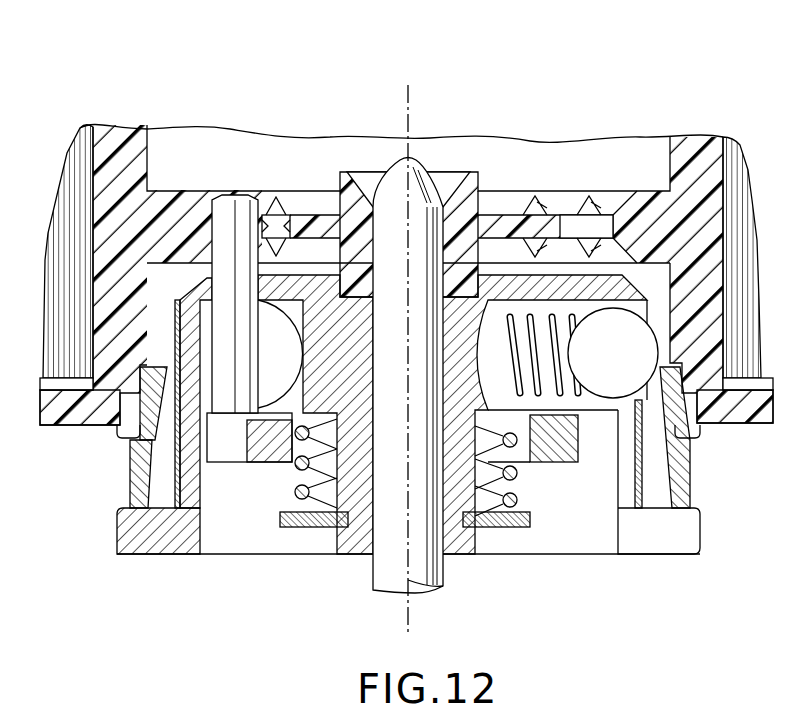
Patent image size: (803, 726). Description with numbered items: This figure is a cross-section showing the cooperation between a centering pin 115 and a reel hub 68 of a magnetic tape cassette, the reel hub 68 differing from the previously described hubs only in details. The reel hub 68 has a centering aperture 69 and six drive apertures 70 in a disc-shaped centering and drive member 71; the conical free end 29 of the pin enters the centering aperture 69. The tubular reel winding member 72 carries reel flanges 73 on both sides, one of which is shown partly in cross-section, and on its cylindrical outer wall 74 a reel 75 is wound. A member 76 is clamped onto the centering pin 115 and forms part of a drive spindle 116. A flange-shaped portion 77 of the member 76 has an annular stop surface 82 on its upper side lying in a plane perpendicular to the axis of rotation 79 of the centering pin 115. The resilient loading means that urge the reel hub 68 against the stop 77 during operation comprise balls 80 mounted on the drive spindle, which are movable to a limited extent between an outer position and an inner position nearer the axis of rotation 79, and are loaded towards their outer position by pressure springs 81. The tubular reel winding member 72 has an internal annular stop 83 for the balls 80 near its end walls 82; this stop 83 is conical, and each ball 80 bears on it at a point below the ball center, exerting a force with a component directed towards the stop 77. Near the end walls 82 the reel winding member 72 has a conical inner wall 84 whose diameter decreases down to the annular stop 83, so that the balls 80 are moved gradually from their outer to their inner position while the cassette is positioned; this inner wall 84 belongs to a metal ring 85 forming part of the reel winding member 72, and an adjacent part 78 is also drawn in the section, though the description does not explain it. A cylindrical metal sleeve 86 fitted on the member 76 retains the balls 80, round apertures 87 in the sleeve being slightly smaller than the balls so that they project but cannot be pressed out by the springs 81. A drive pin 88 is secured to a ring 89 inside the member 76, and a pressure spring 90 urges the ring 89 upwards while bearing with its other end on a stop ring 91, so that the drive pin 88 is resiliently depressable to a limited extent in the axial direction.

The conical free end 29 is at (403, 170).
The reel hub 68 is at (222, 128).
The centering aperture 69 is at (447, 183).
The drive apertures 70 is at (272, 192).
The centering and drive member 71 is at (517, 223).
The tubular reel winding member 72 is at (123, 127).
The reel flanges 73 is at (60, 427).
The cylindrical outer wall 74 is at (78, 137).
The reel 75 is at (70, 182).
The member 76 is at (350, 547).
The flange-shaped portion 77 is at (150, 545).
The wedge ring 78 is at (667, 497).
The axis of rotation 79 is at (415, 612).
The balls 80 is at (637, 333).
The pressure springs 81 is at (577, 417).
The annular stop surface 82 is at (120, 530).
The internal annular stop 83 is at (152, 366).
The conical inner wall 84 is at (130, 492).
The metal ring 85 is at (683, 460).
The cylindrical metal sleeve 86 is at (130, 458).
The round apertures 87 is at (634, 404).
The drive pin 88 is at (243, 210).
The ring 89 is at (565, 460).
The pressure spring 90 is at (505, 488).
The stop ring 91 is at (287, 522).
The centering pin 115 is at (413, 572).
The drive spindle 116 is at (575, 562).